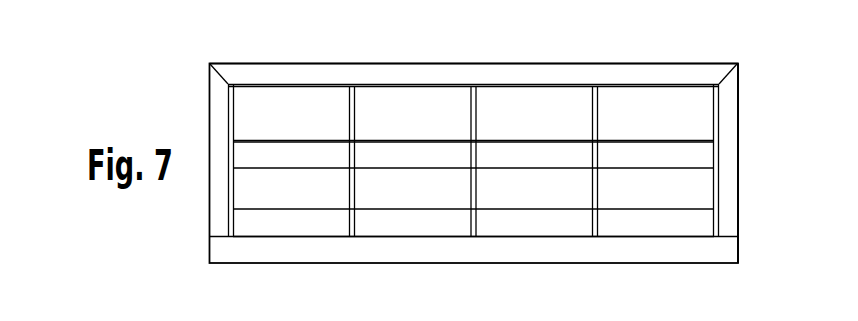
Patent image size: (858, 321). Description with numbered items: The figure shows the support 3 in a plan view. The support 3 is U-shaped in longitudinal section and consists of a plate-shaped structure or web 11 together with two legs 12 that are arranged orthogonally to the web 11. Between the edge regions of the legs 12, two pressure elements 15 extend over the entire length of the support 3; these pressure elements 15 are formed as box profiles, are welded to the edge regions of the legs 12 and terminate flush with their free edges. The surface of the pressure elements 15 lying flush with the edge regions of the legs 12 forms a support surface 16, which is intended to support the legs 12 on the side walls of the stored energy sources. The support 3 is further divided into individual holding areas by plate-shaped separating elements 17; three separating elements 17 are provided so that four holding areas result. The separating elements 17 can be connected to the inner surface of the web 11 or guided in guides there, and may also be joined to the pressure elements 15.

The support 3 is at (750, 75).
The web 11 is at (375, 73).
The legs 12 is at (728, 160).
The pressure elements 15 is at (703, 155).
The support surface 16 is at (546, 165).
The separating elements 17 is at (476, 110).